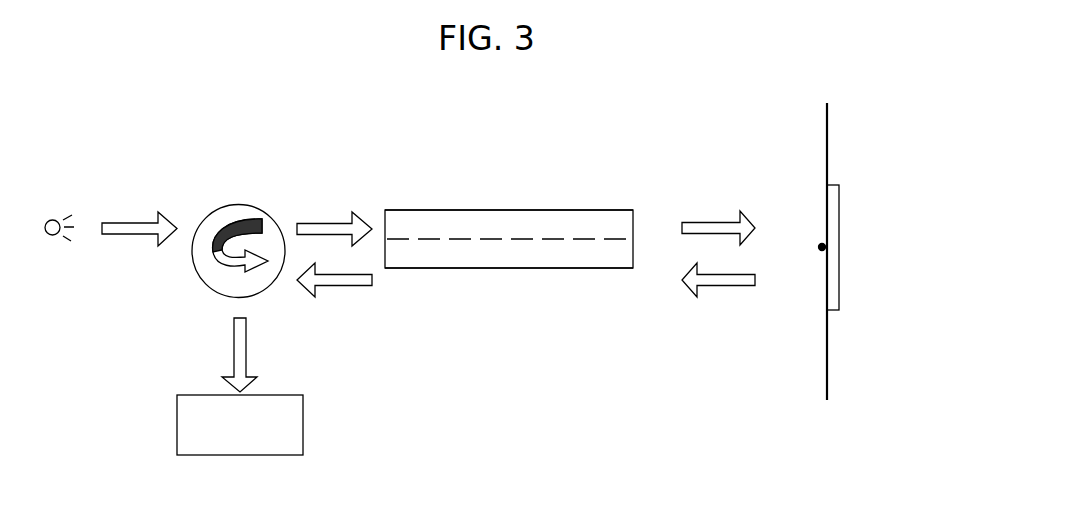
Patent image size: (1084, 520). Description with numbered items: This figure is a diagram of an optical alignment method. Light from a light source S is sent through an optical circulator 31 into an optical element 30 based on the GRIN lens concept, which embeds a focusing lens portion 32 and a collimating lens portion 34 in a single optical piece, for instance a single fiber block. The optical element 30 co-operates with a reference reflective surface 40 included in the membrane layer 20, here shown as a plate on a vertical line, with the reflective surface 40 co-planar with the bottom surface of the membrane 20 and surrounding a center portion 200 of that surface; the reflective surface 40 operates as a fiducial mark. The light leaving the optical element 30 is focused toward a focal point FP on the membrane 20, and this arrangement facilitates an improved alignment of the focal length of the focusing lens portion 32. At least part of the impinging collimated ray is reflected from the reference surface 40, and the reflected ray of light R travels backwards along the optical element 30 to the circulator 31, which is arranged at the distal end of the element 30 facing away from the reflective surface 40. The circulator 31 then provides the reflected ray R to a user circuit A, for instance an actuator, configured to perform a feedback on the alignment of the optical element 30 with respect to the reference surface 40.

The membrane layer 20 is at (840, 210).
The center portion 200 is at (826, 197).
The optical element 30 is at (467, 198).
The optical circulator 31 is at (250, 204).
The focusing lens portion 32 is at (537, 220).
The collimating lens portion 34 is at (540, 256).
The reference reflective surface 40 is at (825, 352).
The light source S is at (48, 237).
The reflected ray of light R is at (246, 355).
The user circuit A is at (289, 423).
The focal point FP is at (805, 260).